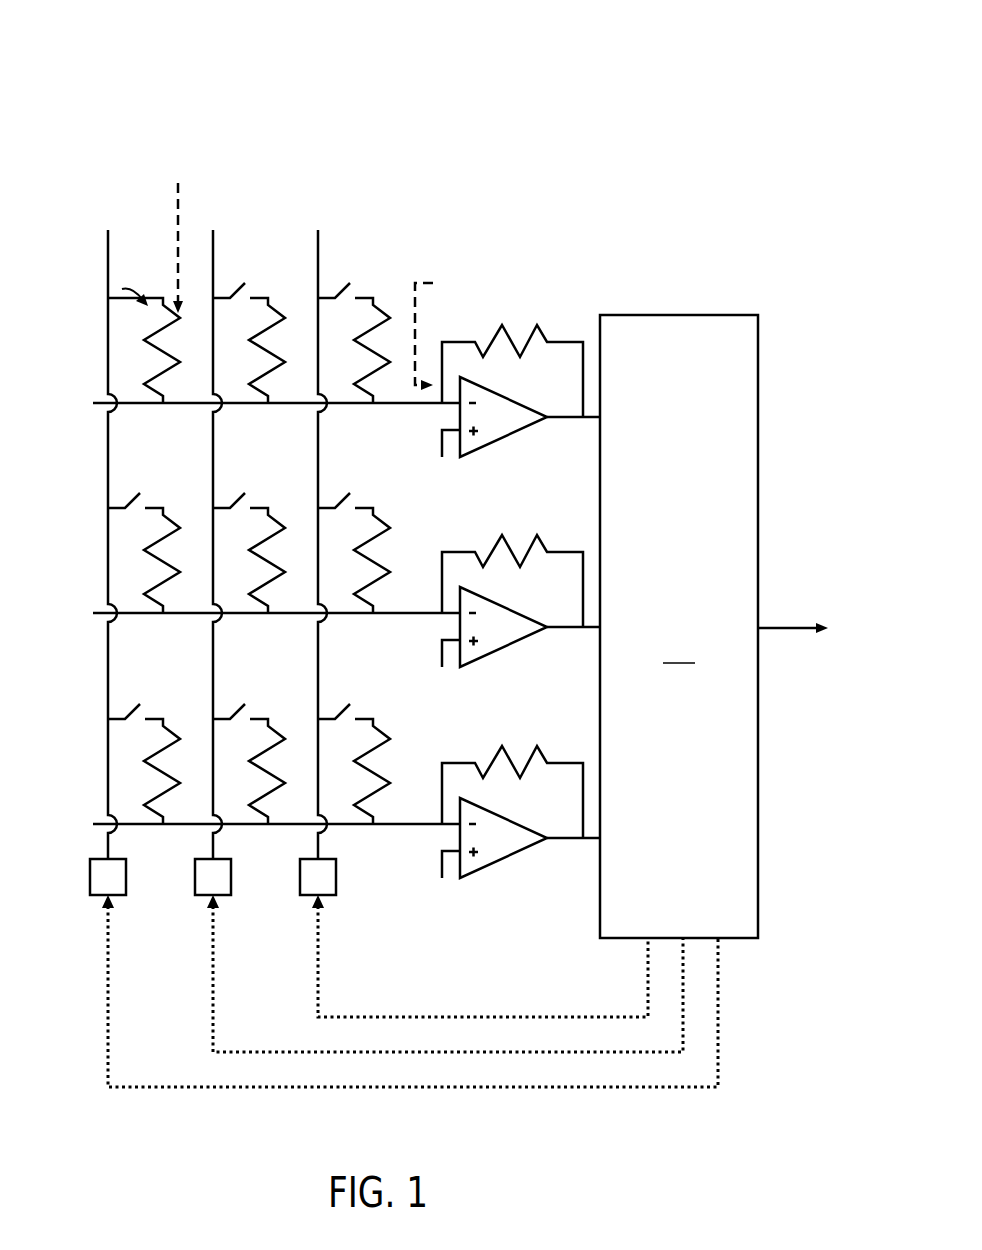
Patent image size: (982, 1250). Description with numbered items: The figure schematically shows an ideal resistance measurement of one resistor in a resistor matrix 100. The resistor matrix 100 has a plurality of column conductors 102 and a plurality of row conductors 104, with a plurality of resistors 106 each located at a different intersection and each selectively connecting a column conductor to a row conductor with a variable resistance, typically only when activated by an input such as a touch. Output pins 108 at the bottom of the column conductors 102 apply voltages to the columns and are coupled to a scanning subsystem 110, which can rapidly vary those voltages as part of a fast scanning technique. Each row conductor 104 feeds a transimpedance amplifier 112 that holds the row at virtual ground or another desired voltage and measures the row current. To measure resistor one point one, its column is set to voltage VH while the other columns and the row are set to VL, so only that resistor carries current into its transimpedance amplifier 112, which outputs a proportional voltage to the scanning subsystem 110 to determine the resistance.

The resistor matrix 100 is at (631, 55).
The column conductors 102 is at (103, 402).
The row conductors 104 is at (108, 247).
The resistors 106 is at (262, 507).
The output pins 108 is at (91, 875).
The scanning subsystem 110 is at (718, 626).
The transimpedance amplifiers 112 is at (494, 918).